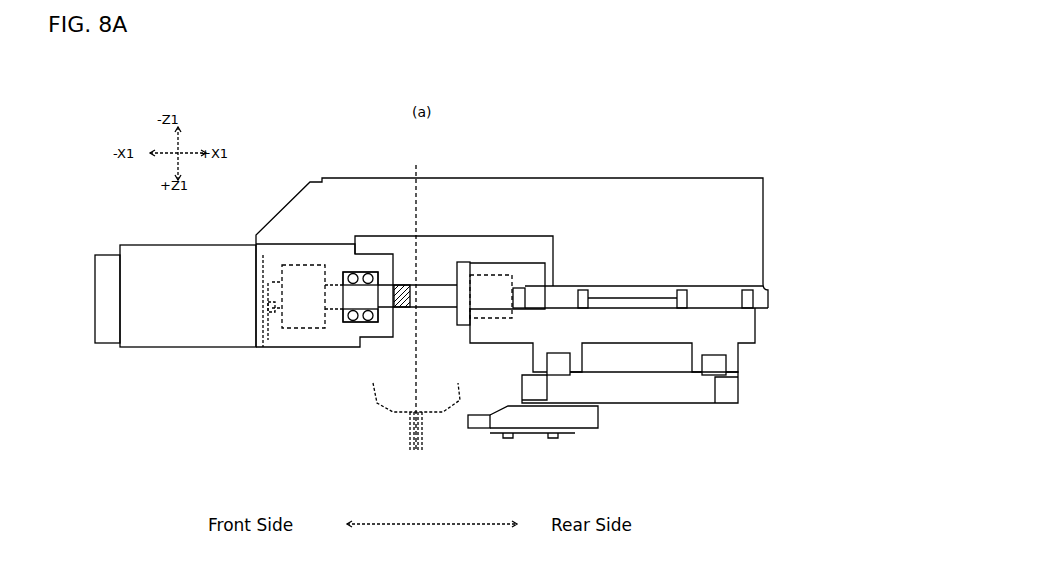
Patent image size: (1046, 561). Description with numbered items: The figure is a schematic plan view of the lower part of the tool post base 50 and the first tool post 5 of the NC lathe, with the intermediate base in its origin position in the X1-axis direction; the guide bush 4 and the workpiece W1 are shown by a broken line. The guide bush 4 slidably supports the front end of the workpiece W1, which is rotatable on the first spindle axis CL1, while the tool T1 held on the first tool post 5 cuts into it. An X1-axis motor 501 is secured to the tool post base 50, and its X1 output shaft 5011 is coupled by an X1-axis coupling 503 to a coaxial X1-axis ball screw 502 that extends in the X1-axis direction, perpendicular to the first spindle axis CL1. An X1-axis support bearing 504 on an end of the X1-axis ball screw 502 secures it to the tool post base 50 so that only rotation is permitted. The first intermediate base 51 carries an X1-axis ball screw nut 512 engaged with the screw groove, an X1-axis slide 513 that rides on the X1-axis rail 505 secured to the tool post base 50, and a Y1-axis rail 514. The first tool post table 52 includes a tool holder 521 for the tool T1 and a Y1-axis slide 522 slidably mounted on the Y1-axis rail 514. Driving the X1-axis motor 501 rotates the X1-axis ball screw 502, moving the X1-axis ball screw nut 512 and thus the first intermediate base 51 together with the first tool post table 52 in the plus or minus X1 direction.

The tool post base 50 is at (517, 177).
The X1-axis motor 501 is at (186, 348).
The X1 output shaft 5011 is at (264, 348).
The X1-axis ball screw 502 is at (431, 312).
The X1-axis coupling 503 is at (305, 330).
The X1-axis support bearing 504 is at (360, 345).
The X1-axis rail 505 is at (768, 294).
The X1-axis ball screw nut 512 is at (483, 272).
The X1-axis slide 513 is at (573, 290).
The first intermediate base 51 is at (756, 332).
The Y1-axis rail 514 is at (533, 350).
The first tool post table 52 is at (670, 404).
The tool holder 521 is at (588, 430).
The Y1-axis slide 522 is at (557, 380).
The first tool post 5 is at (750, 400).
The guide bush 4 is at (390, 405).
The tool T1 is at (477, 430).
The first spindle axis CL1 is at (400, 412).
The workpiece W1 is at (408, 418).